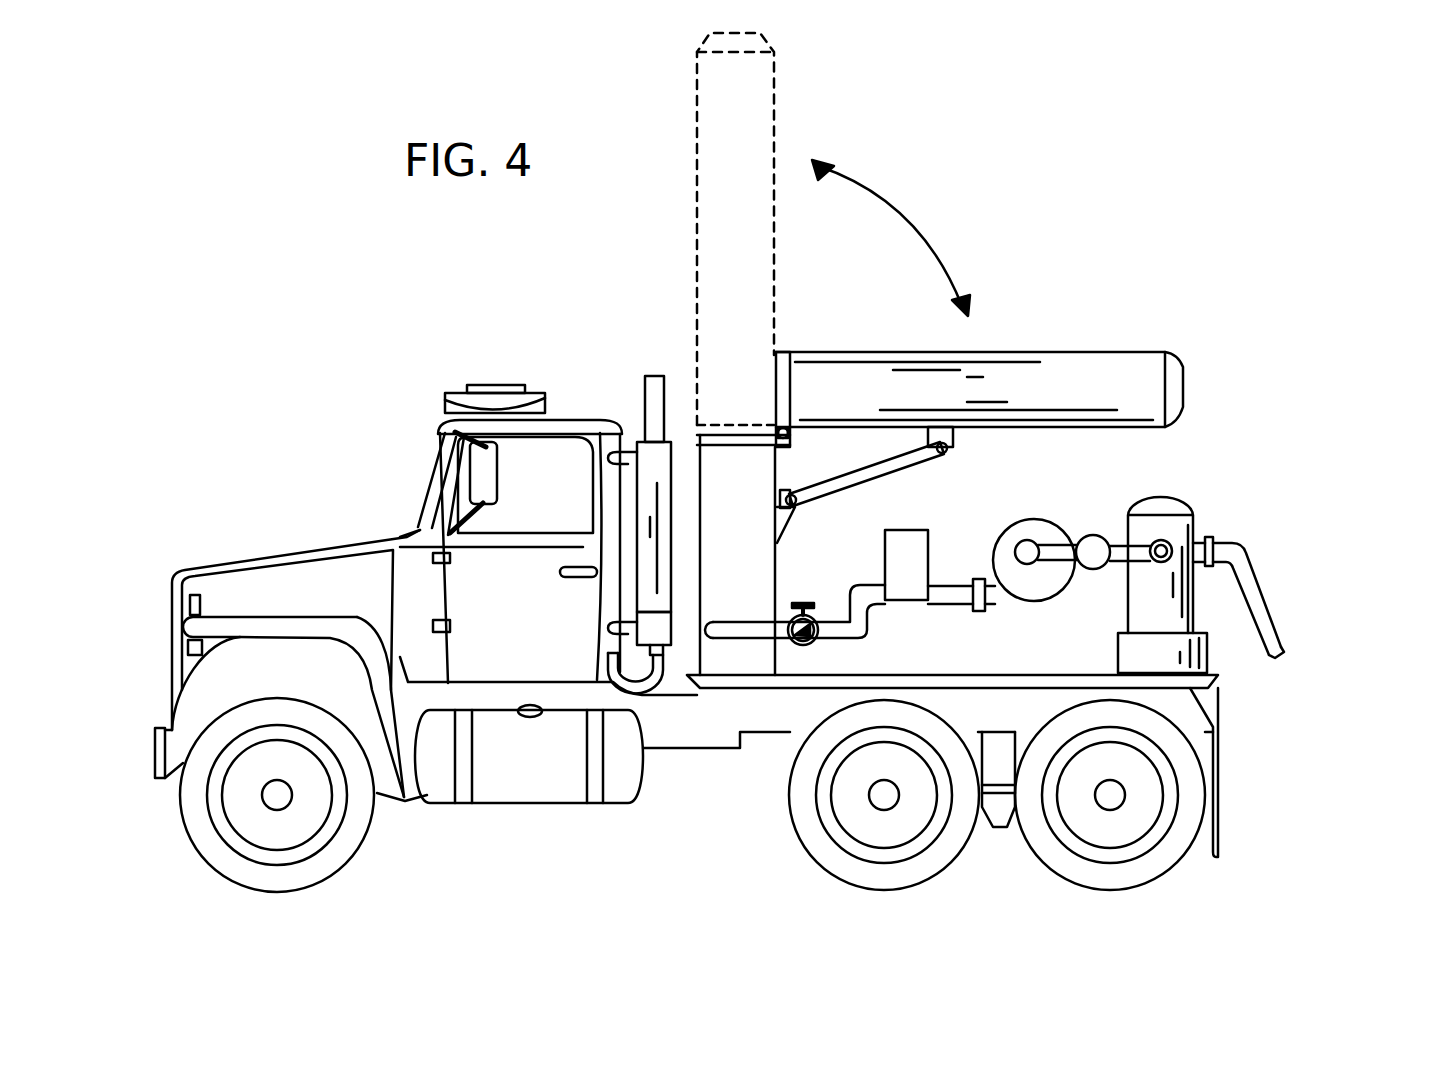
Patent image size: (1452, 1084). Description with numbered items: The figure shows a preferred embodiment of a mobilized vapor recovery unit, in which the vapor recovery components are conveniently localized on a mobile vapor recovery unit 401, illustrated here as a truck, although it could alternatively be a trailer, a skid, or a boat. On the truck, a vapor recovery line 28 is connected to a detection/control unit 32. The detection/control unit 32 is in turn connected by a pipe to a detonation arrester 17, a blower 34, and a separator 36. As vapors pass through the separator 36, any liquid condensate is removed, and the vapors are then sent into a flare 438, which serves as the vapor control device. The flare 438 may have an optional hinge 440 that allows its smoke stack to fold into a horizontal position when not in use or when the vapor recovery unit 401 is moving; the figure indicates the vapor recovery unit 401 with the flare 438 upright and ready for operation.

The mobile vapor recovery unit 401 is at (1283, 326).
The flare 438 is at (1047, 352).
The hinge 440 is at (790, 434).
The separator 36 is at (918, 530).
The blower 34 is at (1055, 519).
The detonation arrester 17 is at (1100, 533).
The detection/control unit 32 is at (1199, 521).
The vapor recovery line 28 is at (1274, 635).